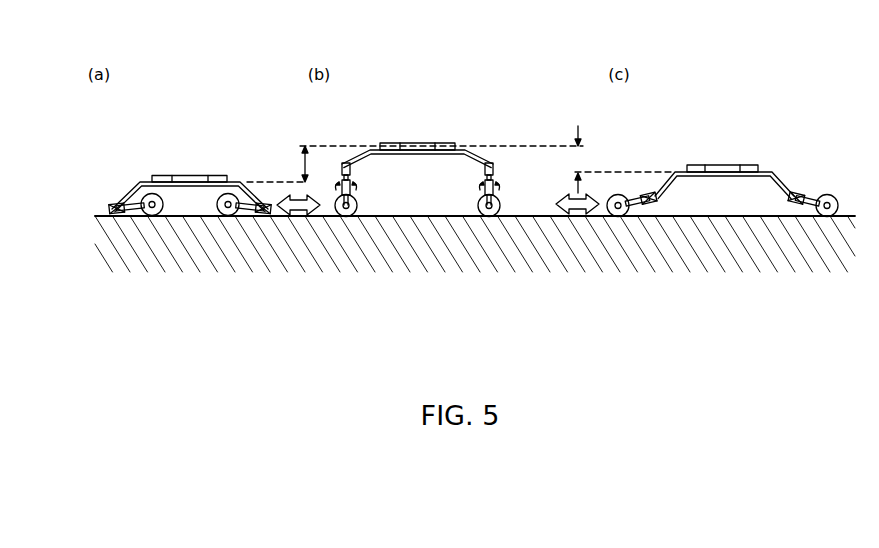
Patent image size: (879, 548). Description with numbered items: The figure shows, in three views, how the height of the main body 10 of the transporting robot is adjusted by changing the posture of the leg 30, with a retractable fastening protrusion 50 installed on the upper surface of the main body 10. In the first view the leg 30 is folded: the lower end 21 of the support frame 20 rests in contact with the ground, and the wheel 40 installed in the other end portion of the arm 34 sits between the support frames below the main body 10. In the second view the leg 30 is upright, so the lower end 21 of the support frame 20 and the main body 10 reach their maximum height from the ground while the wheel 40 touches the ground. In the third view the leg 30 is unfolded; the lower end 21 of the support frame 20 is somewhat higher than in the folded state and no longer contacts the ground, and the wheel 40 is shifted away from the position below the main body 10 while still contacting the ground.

The main body 10 is at (141, 181).
The support frame 20 is at (358, 150).
The lower end 21 is at (105, 219).
The leg 30 is at (117, 303).
The arm 34 is at (135, 208).
The wheel 40 is at (150, 215).
The fastening protrusion 50 is at (188, 175).